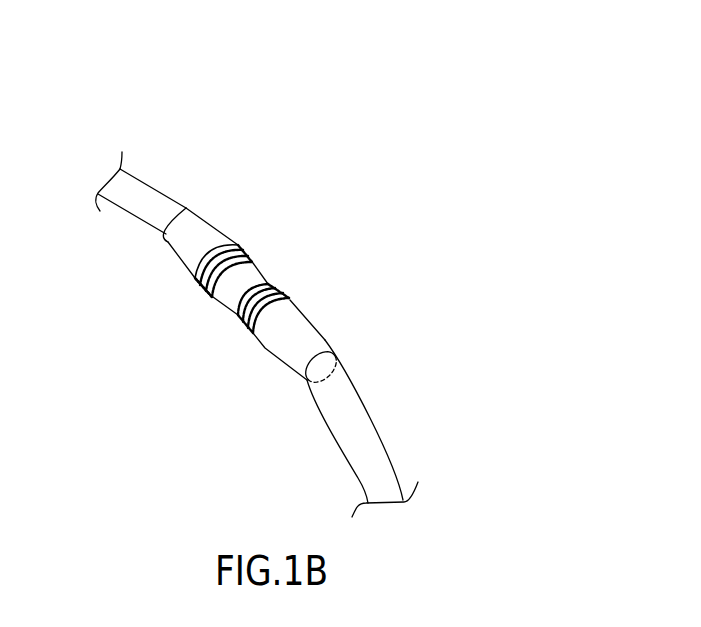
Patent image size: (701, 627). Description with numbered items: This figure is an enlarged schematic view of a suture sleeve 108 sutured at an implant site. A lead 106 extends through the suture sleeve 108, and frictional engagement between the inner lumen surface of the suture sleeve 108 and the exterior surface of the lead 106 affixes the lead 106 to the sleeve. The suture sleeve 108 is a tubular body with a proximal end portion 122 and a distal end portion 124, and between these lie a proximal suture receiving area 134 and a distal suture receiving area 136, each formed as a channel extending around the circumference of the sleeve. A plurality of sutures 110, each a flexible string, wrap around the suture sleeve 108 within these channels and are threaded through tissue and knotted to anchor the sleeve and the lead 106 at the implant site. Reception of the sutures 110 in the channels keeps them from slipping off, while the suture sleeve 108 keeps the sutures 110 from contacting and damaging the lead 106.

The lead 106 is at (363, 402).
The suture sleeve 108 is at (185, 248).
The sutures 110 is at (253, 333).
The proximal end portion 122 is at (313, 321).
The distal end portion 124 is at (191, 228).
The proximal suture receiving area 134 is at (299, 300).
The distal suture receiving area 136 is at (261, 256).